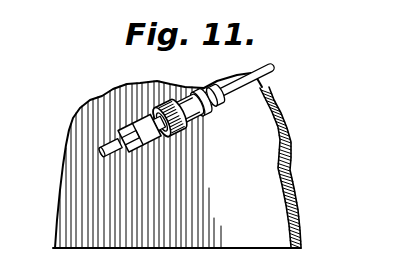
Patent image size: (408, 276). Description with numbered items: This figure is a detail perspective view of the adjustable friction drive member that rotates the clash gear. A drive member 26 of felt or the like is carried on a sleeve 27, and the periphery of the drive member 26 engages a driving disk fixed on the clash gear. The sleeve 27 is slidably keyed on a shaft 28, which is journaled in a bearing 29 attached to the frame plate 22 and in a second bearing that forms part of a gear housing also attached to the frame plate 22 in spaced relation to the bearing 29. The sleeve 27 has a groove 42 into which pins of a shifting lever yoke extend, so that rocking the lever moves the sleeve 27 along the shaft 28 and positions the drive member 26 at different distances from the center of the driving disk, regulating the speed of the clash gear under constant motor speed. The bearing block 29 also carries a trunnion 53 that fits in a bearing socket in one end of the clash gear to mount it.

The frame plate 22 is at (253, 133).
The drive member 26 is at (162, 98).
The sleeve 27 is at (190, 120).
The shaft 28 is at (273, 64).
The bearing 29 is at (120, 128).
The groove 42 is at (207, 92).
The trunnion 53 is at (101, 149).